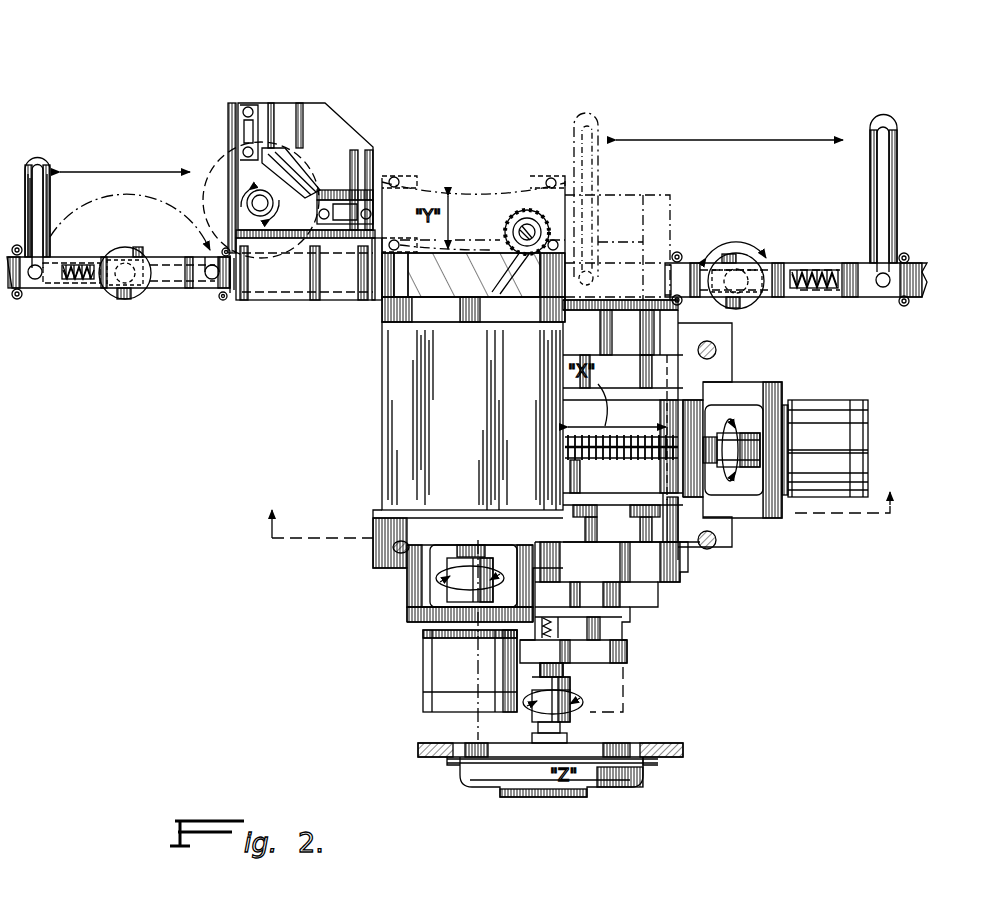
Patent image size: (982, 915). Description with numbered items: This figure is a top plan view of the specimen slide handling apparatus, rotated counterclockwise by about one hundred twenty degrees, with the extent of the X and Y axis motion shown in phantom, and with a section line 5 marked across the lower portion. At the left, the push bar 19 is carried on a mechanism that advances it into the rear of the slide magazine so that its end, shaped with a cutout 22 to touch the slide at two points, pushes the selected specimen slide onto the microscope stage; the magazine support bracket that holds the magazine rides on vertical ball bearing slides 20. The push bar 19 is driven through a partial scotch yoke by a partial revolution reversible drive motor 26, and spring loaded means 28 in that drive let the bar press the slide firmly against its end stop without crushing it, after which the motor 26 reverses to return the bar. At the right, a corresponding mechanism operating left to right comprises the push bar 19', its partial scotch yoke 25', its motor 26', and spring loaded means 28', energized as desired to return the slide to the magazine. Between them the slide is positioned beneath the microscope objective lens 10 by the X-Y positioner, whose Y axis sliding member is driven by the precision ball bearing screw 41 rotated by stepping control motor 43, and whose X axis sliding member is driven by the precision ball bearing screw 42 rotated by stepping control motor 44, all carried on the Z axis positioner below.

The microscope objective lens 10 is at (527, 212).
The push bar 19 is at (118, 277).
The push bar 19' is at (746, 232).
The vertical ball bearing slides 20 is at (330, 212).
The cutout 22 is at (223, 300).
The partial scotch yoke 25' is at (859, 194).
The partial revolution reversible drive motor 26 is at (117, 288).
The motor 26' is at (738, 253).
The spring loaded means 28 is at (93, 242).
The spring loaded means 28' is at (823, 251).
The precision ball bearing screw 41 is at (470, 545).
The precision ball bearing screw 42 is at (600, 455).
The stepping control motor 43 is at (423, 668).
The stepping control motor 44 is at (814, 412).
The section line 5- 5 is at (582, 498).